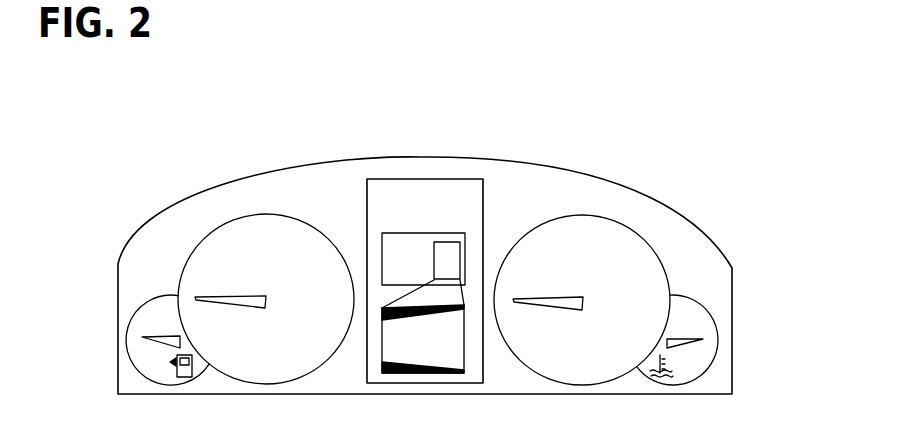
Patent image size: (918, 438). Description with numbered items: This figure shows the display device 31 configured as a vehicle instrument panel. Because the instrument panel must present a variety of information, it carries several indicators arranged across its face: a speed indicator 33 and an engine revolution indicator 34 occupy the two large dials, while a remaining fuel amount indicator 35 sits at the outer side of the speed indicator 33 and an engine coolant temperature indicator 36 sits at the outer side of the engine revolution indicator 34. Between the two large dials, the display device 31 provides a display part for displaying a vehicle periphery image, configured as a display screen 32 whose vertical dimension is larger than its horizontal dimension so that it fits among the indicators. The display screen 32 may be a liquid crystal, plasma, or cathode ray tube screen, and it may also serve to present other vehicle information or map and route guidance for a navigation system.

The display device 31 is at (590, 162).
The display screen 32 is at (437, 179).
The speed indicator 33 is at (292, 218).
The engine revolution indicator 34 is at (663, 262).
The remaining fuel amount indicator 35 is at (128, 327).
The engine coolant temperature indicator 36 is at (707, 307).